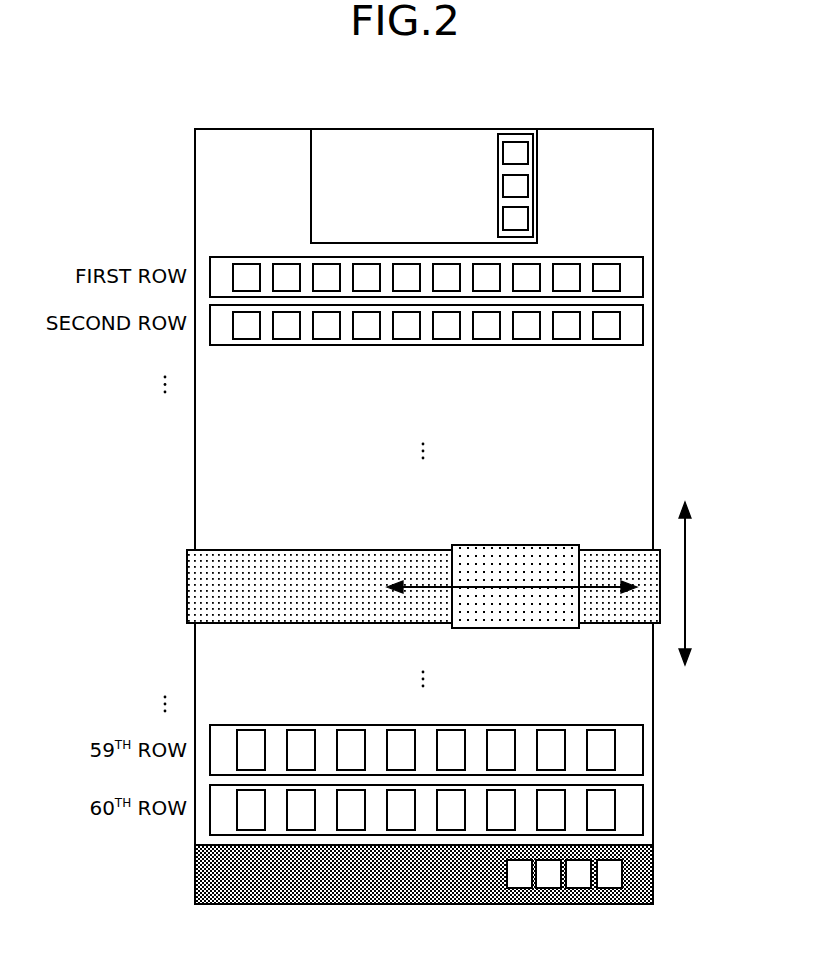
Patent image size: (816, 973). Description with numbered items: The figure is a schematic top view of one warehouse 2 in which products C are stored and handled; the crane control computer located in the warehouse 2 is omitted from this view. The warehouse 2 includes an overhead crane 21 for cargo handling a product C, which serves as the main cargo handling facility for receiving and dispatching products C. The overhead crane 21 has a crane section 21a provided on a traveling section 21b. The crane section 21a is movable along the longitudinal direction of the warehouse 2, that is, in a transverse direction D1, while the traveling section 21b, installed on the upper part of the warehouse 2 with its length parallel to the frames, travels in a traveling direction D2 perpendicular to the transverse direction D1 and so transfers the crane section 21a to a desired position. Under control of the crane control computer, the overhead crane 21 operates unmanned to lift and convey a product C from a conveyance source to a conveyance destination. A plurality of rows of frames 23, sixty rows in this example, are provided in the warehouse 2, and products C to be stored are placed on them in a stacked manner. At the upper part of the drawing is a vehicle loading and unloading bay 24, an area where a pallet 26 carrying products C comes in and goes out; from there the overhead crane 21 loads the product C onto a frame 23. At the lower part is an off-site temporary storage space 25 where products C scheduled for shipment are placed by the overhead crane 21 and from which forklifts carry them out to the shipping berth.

The warehouse 2 is at (626, 128).
The vehicle loading and unloading bay 24 is at (538, 123).
The pallet 26 is at (533, 165).
The product C is at (517, 219).
The frame 23 is at (643, 305).
The overhead crane 21 is at (423, 552).
The crane section 21a is at (516, 543).
The traveling section 21b is at (303, 548).
The off-site temporary storage space 25 is at (655, 873).
The transverse direction D1 is at (593, 590).
The traveling direction D2 is at (688, 586).